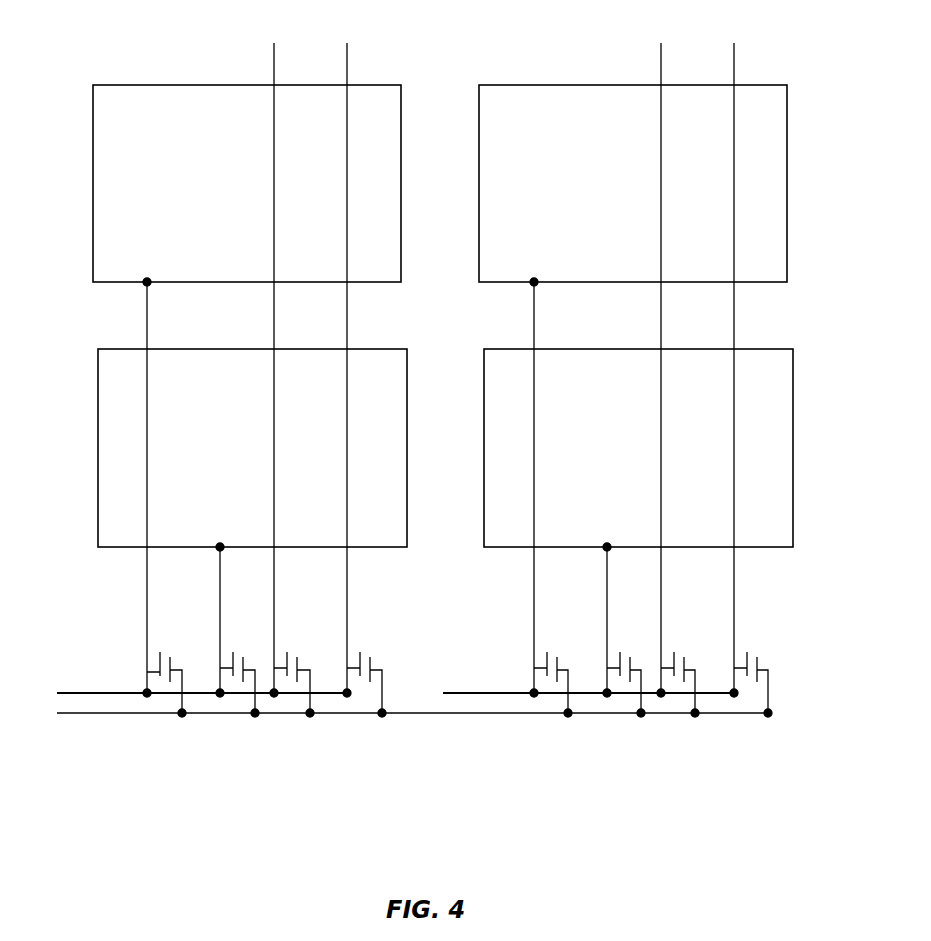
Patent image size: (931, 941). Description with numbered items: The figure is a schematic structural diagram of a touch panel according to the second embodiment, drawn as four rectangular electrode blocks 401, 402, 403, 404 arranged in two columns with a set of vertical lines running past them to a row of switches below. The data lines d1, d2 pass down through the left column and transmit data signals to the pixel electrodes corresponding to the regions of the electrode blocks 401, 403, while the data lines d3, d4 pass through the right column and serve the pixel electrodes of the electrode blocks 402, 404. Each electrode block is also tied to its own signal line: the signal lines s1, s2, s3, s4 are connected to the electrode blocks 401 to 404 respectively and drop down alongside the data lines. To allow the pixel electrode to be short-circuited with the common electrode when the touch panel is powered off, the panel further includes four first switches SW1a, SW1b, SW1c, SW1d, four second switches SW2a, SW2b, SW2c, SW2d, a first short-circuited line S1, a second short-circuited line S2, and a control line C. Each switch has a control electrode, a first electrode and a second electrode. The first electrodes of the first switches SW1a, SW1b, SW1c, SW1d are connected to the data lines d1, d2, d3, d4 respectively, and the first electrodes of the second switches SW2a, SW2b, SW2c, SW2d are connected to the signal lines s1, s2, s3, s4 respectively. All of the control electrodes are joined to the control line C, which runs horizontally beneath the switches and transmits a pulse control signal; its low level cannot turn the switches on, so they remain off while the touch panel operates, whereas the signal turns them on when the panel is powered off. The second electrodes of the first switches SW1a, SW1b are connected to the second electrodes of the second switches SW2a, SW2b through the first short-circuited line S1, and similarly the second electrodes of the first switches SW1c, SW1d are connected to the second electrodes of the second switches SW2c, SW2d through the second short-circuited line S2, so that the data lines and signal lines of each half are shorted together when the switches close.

The electrode block 401 is at (247, 183).
The electrode block 402 is at (633, 183).
The electrode block 403 is at (252, 448).
The electrode block 404 is at (638, 448).
The data line d1 is at (274, 59).
The data line d2 is at (347, 59).
The data line d3 is at (661, 59).
The data line d4 is at (734, 59).
The signal line s1 is at (147, 580).
The signal line s2 is at (220, 590).
The signal line s3 is at (534, 580).
The signal line s4 is at (607, 590).
The first short-circuited line S1 is at (72, 693).
The second short-circuited line S2 is at (457, 693).
The control line C is at (70, 713).
The first switch SW1a is at (287, 676).
The first switch SW1b is at (361, 676).
The first switch SW1c is at (675, 678).
The first switch SW1d is at (748, 678).
The second switch SW2a is at (160, 676).
The second switch SW2b is at (231, 676).
The second switch SW2c is at (548, 676).
The second switch SW2d is at (616, 690).